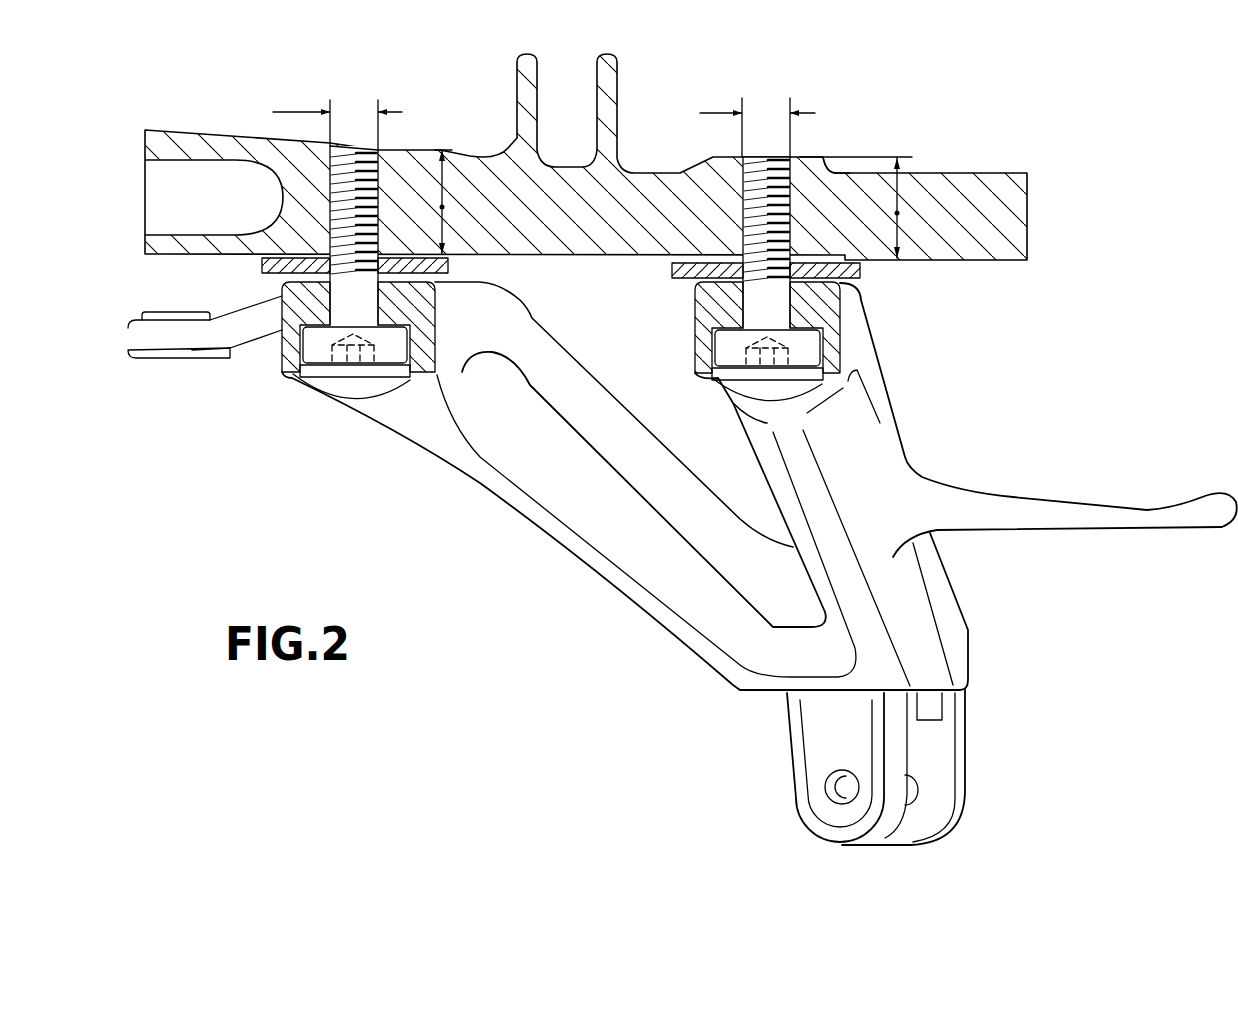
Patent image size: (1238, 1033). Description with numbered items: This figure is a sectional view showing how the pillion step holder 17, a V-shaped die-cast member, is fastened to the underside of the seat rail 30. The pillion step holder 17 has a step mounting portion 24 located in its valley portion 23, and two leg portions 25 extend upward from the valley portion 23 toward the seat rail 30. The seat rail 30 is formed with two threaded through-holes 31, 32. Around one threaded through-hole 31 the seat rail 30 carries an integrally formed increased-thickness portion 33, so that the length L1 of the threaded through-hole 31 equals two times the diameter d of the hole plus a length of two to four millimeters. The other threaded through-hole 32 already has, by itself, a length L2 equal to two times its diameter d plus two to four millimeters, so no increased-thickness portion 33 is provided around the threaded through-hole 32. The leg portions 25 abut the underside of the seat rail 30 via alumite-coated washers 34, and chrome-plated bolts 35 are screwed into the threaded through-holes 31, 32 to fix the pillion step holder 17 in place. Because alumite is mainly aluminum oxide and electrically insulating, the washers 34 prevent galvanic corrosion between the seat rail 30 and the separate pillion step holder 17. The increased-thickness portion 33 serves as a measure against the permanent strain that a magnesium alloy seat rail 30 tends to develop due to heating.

The pillion step holder 17 is at (607, 613).
The valley portion 23 is at (783, 602).
The step mounting portion 24 is at (943, 770).
The leg portions 25 is at (530, 508).
The seat rail 30 is at (1012, 228).
The threaded through-hole 31 is at (745, 203).
The threaded through-hole 32 is at (335, 188).
The increased-thickness portion 33 is at (824, 153).
The alumite-coated washers 34 is at (262, 263).
The chrome-plated bolts 35 is at (320, 356).
The diameter d is at (544, 121).
The length of threaded through-hole 31 L1 is at (899, 212).
The length of threaded through-hole 32 L2 is at (444, 206).